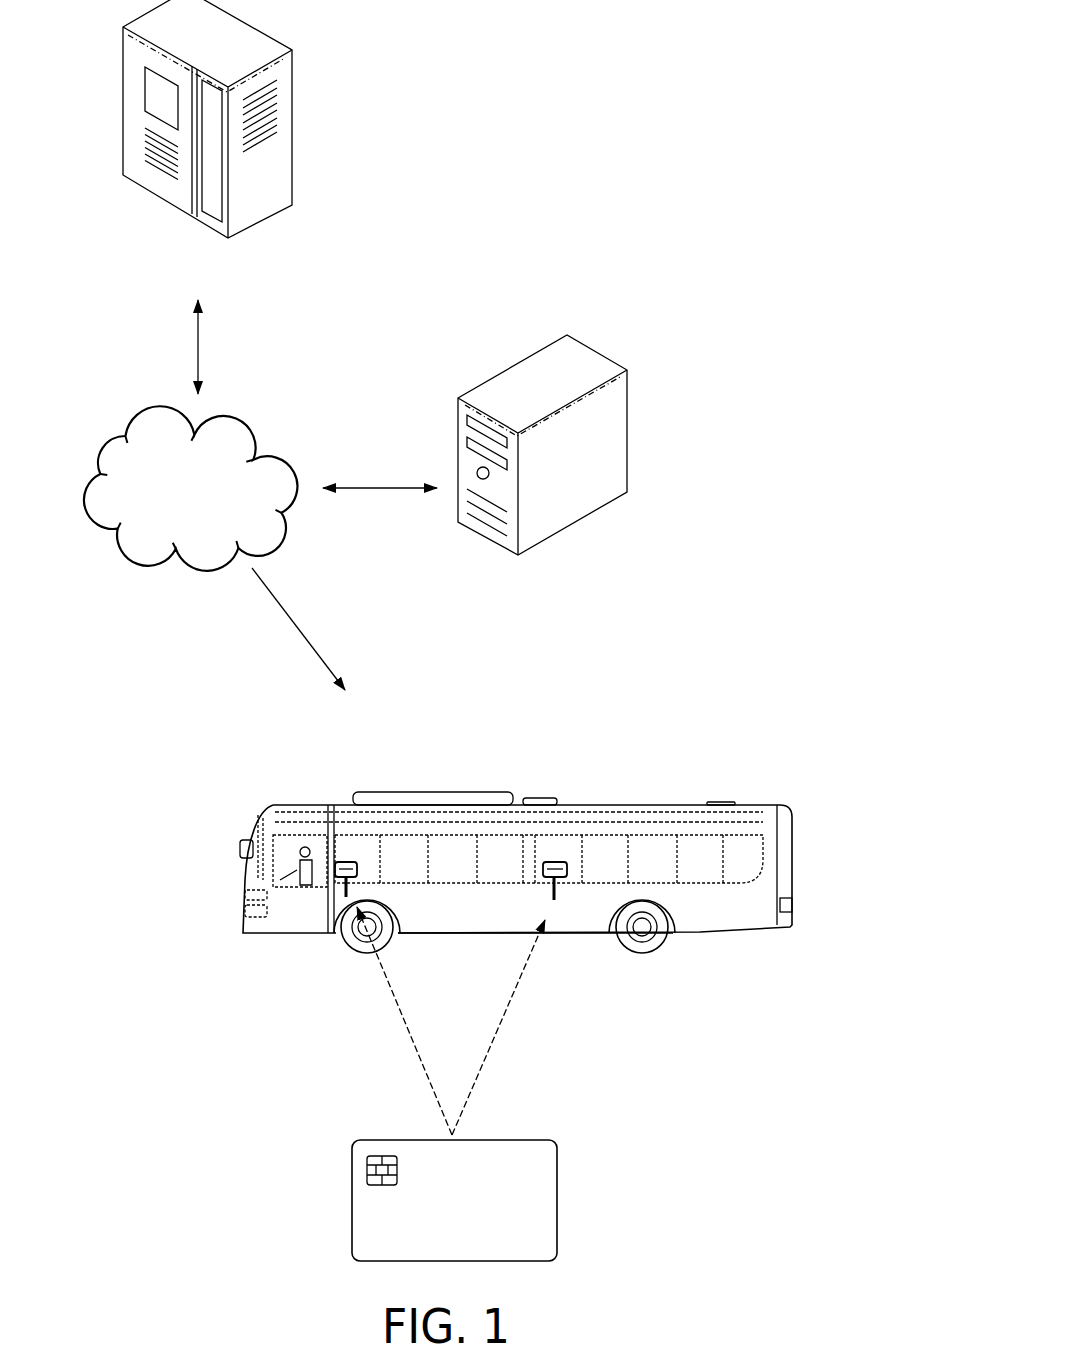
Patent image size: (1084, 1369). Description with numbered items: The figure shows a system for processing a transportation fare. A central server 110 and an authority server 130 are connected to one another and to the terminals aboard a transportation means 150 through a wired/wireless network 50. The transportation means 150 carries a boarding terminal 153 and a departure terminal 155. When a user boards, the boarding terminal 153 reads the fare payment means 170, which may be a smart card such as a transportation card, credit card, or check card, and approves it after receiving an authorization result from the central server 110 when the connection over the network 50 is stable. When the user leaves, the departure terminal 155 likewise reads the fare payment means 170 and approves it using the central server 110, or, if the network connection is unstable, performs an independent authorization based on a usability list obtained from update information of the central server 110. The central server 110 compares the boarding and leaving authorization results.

The central server 110 is at (288, 125).
The wired/wireless network 50 is at (255, 430).
The authority server 130 is at (582, 358).
The transportation means 150 is at (782, 868).
The boarding terminal 153 is at (346, 862).
The departure terminal 155 is at (555, 862).
The fare payment means 170 is at (488, 1140).